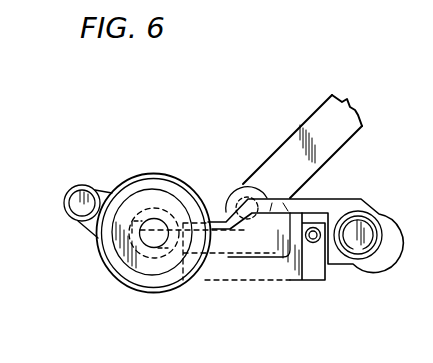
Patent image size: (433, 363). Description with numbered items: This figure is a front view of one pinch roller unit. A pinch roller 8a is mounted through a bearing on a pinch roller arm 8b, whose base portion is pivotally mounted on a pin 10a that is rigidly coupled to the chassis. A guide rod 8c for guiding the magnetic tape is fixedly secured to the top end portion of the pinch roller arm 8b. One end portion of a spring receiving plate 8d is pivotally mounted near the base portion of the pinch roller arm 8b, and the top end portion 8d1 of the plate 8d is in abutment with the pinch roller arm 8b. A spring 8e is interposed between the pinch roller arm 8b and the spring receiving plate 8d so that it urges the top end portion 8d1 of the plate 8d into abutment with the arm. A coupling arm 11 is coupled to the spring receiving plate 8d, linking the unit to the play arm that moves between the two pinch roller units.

The pinch roller 8a is at (112, 265).
The pinch roller arm 8b is at (337, 202).
The guide rod 8c is at (75, 184).
The spring receiving plate 8d is at (263, 270).
The top end portion of the spring receiving plate 8d1 is at (129, 225).
The spring 8e is at (213, 282).
The pin 10a is at (358, 248).
The coupling arm 11 is at (312, 122).